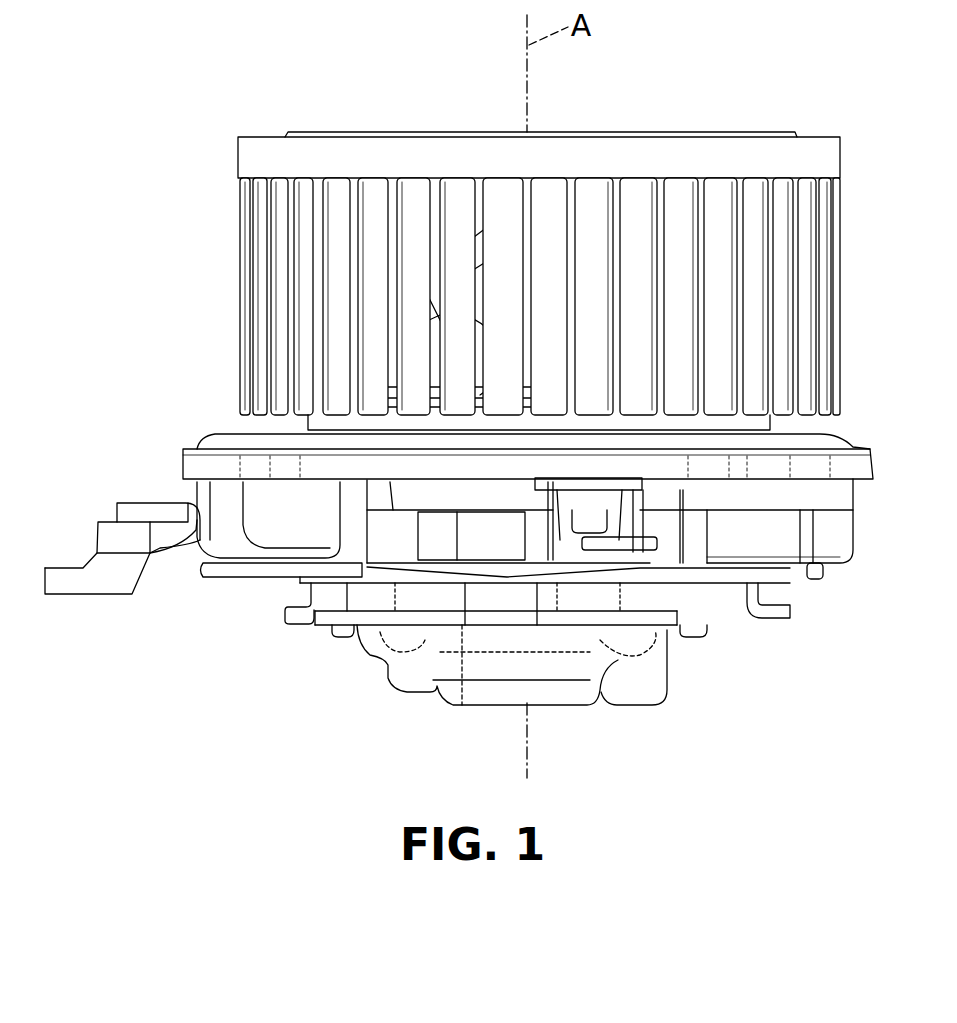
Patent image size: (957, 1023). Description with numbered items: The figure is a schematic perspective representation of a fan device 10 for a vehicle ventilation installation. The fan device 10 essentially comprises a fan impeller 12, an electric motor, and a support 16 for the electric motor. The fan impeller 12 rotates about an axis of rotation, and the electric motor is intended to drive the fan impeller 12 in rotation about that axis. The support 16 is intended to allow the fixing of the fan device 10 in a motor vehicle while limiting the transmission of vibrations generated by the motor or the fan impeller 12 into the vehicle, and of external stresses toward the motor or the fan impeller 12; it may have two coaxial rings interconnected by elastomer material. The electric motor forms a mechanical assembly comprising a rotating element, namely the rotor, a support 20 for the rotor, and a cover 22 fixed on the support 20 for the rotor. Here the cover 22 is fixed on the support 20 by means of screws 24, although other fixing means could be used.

The fan device 10 is at (195, 186).
The fan impeller 12 is at (340, 160).
The support 16 is at (375, 570).
The support for the rotor 20 is at (610, 598).
The cover 22 is at (457, 668).
The screws 24 is at (335, 633).